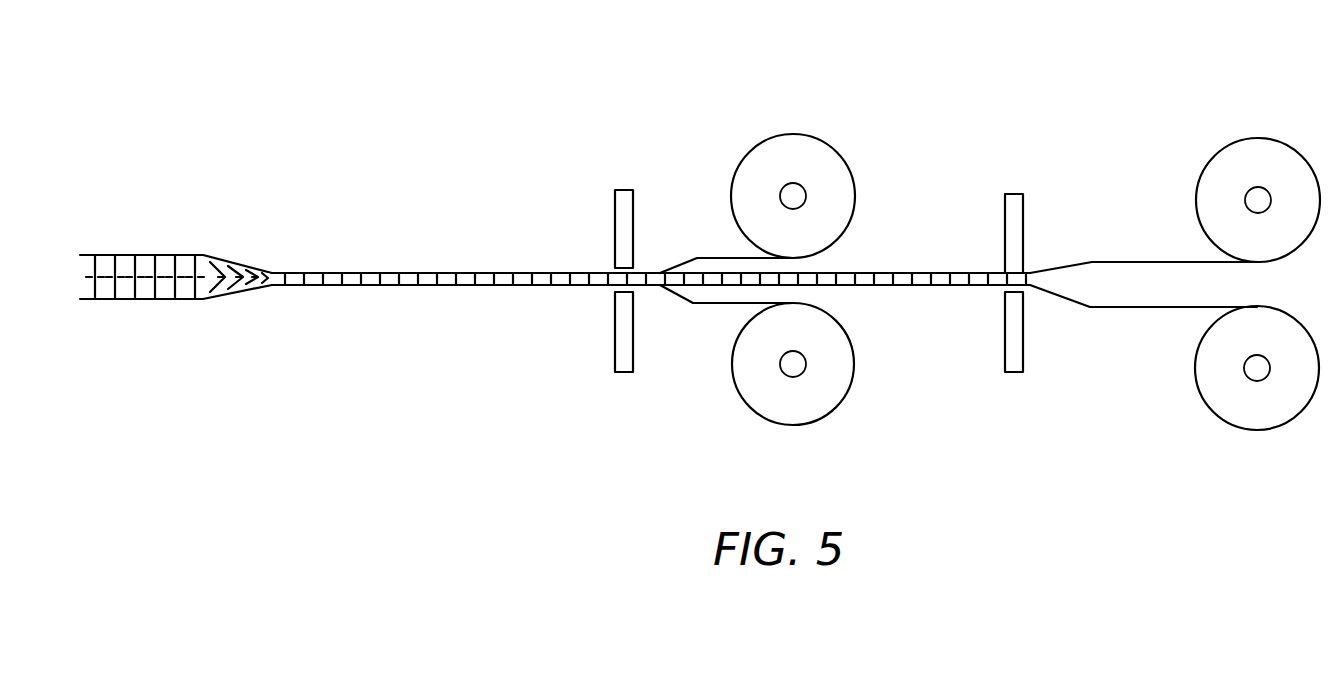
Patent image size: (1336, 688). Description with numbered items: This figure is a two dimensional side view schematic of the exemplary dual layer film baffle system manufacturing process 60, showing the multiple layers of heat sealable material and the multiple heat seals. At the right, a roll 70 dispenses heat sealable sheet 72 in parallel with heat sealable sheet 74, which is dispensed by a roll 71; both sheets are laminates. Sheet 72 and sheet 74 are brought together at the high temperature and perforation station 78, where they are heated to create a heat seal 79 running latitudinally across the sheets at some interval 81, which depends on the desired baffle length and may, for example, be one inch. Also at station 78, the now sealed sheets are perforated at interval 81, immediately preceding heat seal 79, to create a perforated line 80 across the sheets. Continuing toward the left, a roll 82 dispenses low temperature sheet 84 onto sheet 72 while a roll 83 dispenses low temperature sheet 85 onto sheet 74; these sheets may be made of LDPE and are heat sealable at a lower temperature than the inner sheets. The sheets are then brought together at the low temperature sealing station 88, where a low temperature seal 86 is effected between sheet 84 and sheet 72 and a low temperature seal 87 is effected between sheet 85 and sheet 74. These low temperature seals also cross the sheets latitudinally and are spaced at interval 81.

The dual layer film baffle system manufacturing process 60 is at (615, 78).
The roll 70 is at (1242, 138).
The roll 71 is at (1228, 422).
The heat sealable sheet 72 is at (1148, 260).
The heat sealable sheet 74 is at (1138, 308).
The high temperature and perforation station 78 is at (1015, 193).
The heat seal 79 is at (203, 257).
The perforated line 80 is at (222, 289).
The interval 81 is at (917, 291).
The roll 82 is at (768, 140).
The roll 83 is at (758, 413).
The low temperature sheet 84 is at (698, 255).
The low temperature sheet 85 is at (693, 307).
The low temperature seal 86 is at (213, 268).
The low temperature seal 87 is at (213, 303).
The low temperature sealing station 88 is at (625, 188).